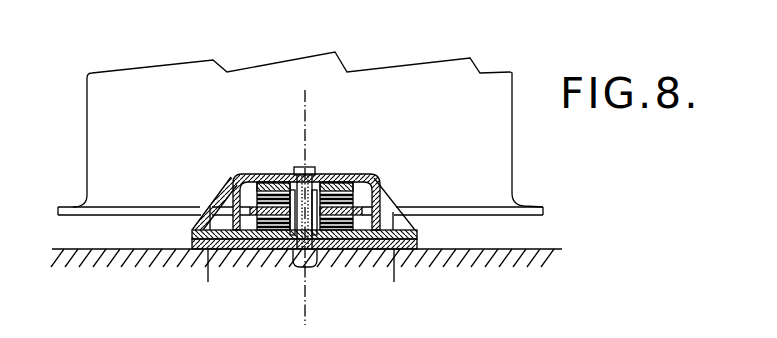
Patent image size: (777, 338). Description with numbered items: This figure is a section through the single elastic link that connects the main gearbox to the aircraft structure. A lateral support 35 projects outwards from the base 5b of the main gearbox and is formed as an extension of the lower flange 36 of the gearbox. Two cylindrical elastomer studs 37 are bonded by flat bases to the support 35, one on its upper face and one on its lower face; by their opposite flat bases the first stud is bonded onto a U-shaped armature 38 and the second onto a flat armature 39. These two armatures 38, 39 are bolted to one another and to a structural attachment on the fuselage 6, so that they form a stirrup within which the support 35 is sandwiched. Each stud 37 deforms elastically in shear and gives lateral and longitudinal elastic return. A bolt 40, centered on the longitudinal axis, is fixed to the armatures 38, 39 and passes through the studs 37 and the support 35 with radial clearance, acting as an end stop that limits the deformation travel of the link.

The base of the main gearbox 5b is at (498, 158).
The fuselage 6 is at (467, 258).
The lateral support 35 is at (262, 240).
The lower flange of the main gearbox 36 is at (523, 210).
The cylindrical elastomer studs 37 is at (338, 181).
The U-shaped armature 38 is at (267, 176).
The flat armature 39 is at (319, 246).
The bolt 40 is at (297, 167).